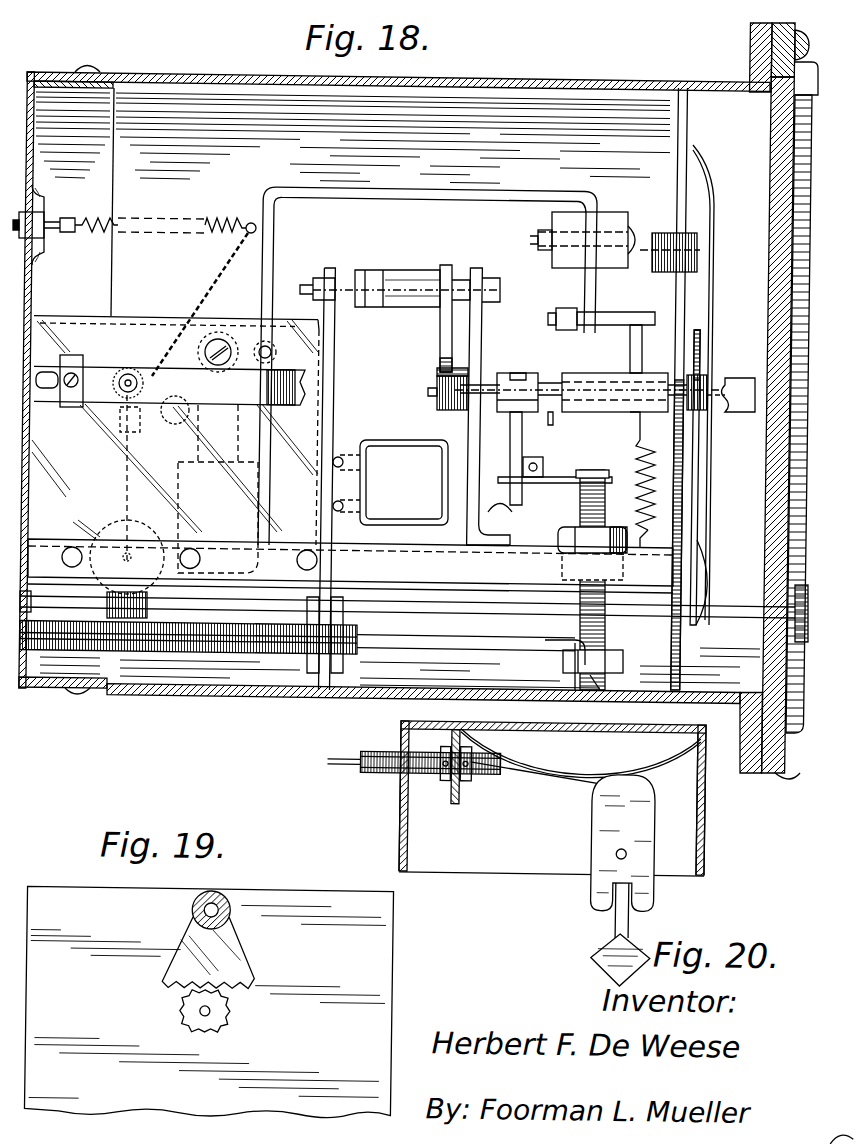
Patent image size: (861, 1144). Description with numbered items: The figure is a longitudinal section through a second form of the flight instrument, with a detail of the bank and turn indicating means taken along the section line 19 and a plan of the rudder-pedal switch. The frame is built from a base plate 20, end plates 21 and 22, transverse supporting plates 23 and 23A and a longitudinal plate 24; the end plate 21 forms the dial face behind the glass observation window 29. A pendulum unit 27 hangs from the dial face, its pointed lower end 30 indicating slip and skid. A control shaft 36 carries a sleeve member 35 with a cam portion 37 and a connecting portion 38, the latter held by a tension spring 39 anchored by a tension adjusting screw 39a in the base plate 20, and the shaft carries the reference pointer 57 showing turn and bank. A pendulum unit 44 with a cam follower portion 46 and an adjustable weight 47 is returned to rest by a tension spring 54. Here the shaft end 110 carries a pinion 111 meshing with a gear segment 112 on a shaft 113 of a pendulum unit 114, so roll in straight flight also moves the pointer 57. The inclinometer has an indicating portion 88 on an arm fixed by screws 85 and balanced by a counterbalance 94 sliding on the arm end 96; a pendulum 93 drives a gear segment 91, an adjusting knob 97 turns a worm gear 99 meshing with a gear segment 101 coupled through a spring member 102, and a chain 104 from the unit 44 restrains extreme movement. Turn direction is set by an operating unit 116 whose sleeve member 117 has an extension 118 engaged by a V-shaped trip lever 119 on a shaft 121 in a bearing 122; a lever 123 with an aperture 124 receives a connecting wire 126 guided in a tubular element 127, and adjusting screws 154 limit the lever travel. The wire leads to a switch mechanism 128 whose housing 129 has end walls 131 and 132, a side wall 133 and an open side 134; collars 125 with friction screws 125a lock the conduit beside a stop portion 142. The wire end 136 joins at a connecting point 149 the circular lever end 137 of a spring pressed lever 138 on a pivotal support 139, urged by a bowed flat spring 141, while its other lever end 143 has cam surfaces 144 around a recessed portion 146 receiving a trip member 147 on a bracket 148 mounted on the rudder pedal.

In FIG. 18, the section line 19 is at (440, 228).
In FIG. 18, the base plate 20 is at (440, 578).
In FIG. 18, the end plate 21 is at (688, 126).
In FIG. 18, the end plate 22 is at (335, 236).
In FIG. 18, the intermediate supporting plate 23 is at (483, 328).
In FIG. 19, the intermediate supporting plate 23 is at (384, 980).
In FIG. 18, the intermediate supporting plate 23A is at (330, 268).
In FIG. 18, the intermediate supporting plate 24 is at (125, 330).
In FIG. 18, the pendulum unit 27 is at (699, 496).
In FIG. 18, the glass observation window 29 is at (767, 163).
In FIG. 18, the lower end of pendulum 30 is at (713, 580).
In FIG. 18, the sleeve member 35 is at (612, 373).
In FIG. 18, the control shaft 36 is at (551, 414).
In FIG. 19, the control shaft 36 is at (202, 1013).
In FIG. 18, the cam portion 37 is at (632, 350).
In FIG. 18, the connecting portion 38 is at (640, 440).
In FIG. 18, the tension spring 39 is at (656, 466).
In FIG. 18, the tension adjusting screw 39a is at (648, 547).
In FIG. 18, the pendulum unit 44 is at (451, 186).
In FIG. 18, the cam follower portion 46 is at (566, 313).
In FIG. 18, the adjustable weight 47 is at (612, 218).
In FIG. 18, the tension spring 54 is at (212, 222).
In FIG. 18, the reference pointer 57 is at (715, 201).
In FIG. 18, the screws 85 is at (128, 368).
In FIG. 18, the indicating portion 88 is at (740, 378).
In FIG. 18, the gear segment 91 is at (171, 426).
In FIG. 18, the pendulum 93 is at (258, 481).
In FIG. 18, the counterbalance 94 is at (78, 365).
In FIG. 18, the arm end 96 is at (50, 406).
In FIG. 18, the adjusting knob 97 is at (795, 632).
In FIG. 18, the worm gear 99 is at (140, 630).
In FIG. 18, the gear segment 101 is at (100, 543).
In FIG. 18, the spring member 102 is at (125, 488).
In FIG. 18, the chain 104 is at (216, 286).
In FIG. 18, the shaft end 110 is at (428, 390).
In FIG. 18, the pinion 111 is at (438, 368).
In FIG. 19, the pinion 111 is at (222, 1013).
In FIG. 18, the gear segment 112 is at (440, 333).
In FIG. 19, the gear segment 112 is at (240, 958).
In FIG. 18, the shaft 113 is at (452, 268).
In FIG. 19, the shaft 113 is at (220, 893).
In FIG. 18, the pendulum unit 114 is at (436, 484).
In FIG. 18, the operating unit 116 is at (567, 470).
In FIG. 18, the sleeve member 117 is at (526, 373).
In FIG. 18, the extension 118 is at (511, 446).
In FIG. 18, the trip lever 119 is at (533, 478).
In FIG. 18, the shaft 121 is at (580, 621).
In FIG. 18, the bearing 122 is at (560, 549).
In FIG. 18, the lever 123 is at (606, 650).
In FIG. 18, the aperture 124 is at (566, 662).
In FIG. 20, the collars 125 is at (466, 784).
In FIG. 20, the friction screw 125a is at (446, 770).
In FIG. 18, the connecting wire 126 is at (483, 650).
In FIG. 20, the connecting wire 126 is at (545, 751).
In FIG. 18, the tubular element 127 is at (210, 653).
In FIG. 20, the tubular element 127 is at (372, 764).
In FIG. 20, the switch mechanism 128 is at (483, 879).
In FIG. 20, the housing 129 is at (707, 823).
In FIG. 20, the end wall 131 is at (400, 822).
In FIG. 20, the end wall 132 is at (706, 866).
In FIG. 20, the side wall 133 is at (700, 746).
In FIG. 20, the open side 134 is at (527, 876).
In FIG. 20, the wire end 136 is at (602, 780).
In FIG. 20, the lever end 137 is at (646, 790).
In FIG. 20, the spring pressed lever 138 is at (592, 829).
In FIG. 20, the pivotal support 139 is at (627, 853).
In FIG. 20, the flat spring 141 is at (640, 762).
In FIG. 20, the stop portion 142 is at (450, 746).
In FIG. 20, the lever end 143 is at (645, 894).
In FIG. 20, the cam surfaces 144 is at (613, 896).
In FIG. 20, the recessed portion 146 is at (612, 881).
In FIG. 20, the trip member 147 is at (615, 926).
In FIG. 20, the bracket 148 is at (594, 960).
In FIG. 20, the connecting point 149 is at (620, 790).
In FIG. 18, the adjusting screw 154 is at (522, 496).